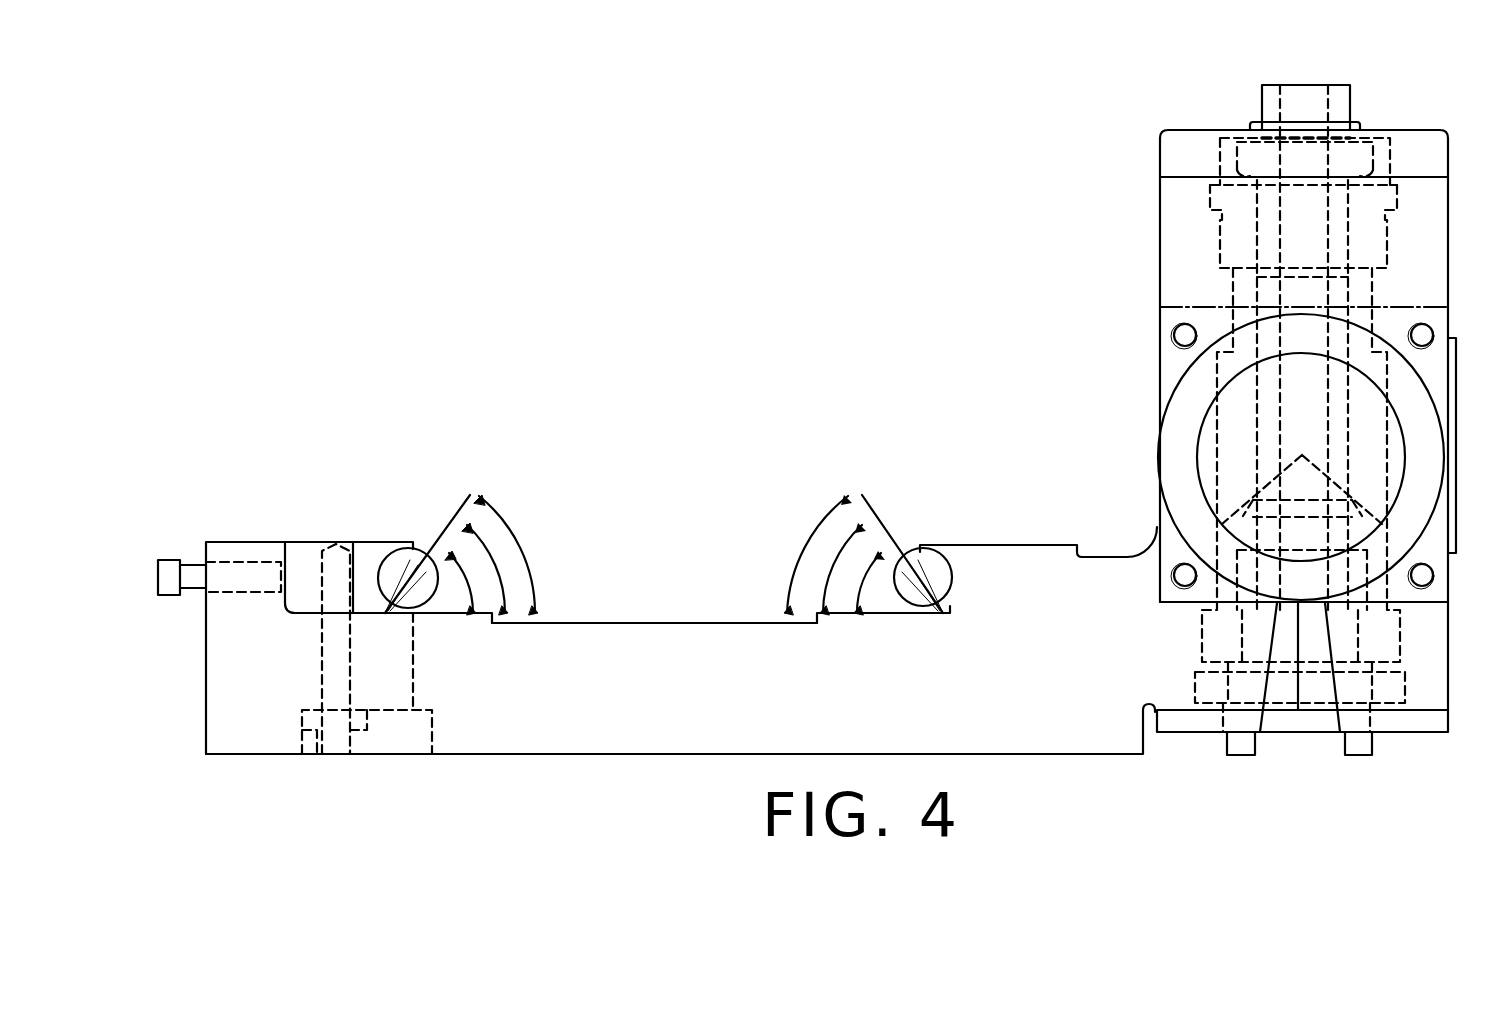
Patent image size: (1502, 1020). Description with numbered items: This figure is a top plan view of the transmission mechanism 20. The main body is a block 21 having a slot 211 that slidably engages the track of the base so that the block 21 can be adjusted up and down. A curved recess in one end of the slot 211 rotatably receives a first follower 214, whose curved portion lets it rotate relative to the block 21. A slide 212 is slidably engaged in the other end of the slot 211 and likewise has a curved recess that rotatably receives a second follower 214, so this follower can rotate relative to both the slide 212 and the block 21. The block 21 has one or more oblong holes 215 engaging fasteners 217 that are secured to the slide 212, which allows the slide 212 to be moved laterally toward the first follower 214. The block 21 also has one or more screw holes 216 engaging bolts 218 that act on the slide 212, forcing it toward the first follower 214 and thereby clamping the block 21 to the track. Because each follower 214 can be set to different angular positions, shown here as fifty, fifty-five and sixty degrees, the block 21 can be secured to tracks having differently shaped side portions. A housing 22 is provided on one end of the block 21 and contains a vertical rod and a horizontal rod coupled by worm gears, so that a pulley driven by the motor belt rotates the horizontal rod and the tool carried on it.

The transmission mechanism 20 is at (1149, 280).
The block 21 is at (732, 754).
The housing 22 is at (1434, 474).
The slot 211 is at (661, 622).
The slide 212 is at (304, 545).
The follower 214 is at (404, 560).
The oblong hole 215 is at (341, 754).
The screw hole 216 is at (250, 560).
The fastener 217 is at (303, 754).
The bolt 218 is at (170, 561).